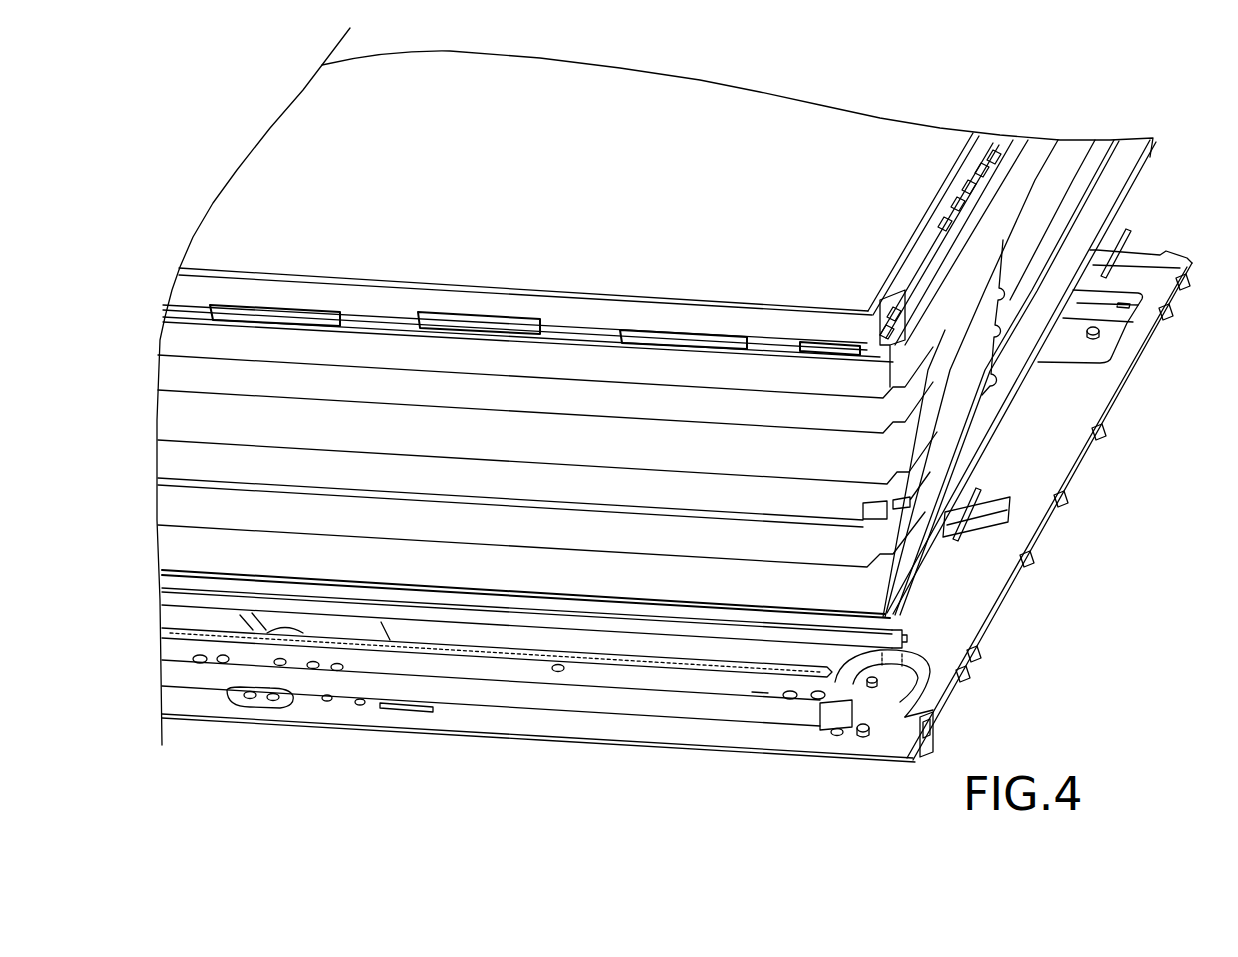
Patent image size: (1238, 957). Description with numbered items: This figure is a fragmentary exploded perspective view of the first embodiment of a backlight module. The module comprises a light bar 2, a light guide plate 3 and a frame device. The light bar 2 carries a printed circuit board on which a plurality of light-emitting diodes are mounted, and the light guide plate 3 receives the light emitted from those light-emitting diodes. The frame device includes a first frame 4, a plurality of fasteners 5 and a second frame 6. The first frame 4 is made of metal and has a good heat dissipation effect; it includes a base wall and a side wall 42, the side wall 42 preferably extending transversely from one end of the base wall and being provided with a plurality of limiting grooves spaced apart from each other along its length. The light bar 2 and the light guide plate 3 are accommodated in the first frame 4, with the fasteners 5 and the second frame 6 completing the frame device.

The light bar 2 is at (908, 636).
The light guide plate 3 is at (897, 578).
The first frame 4 is at (618, 748).
The fasteners 5 is at (320, 670).
The second frame 6 is at (193, 287).
The side wall 42 is at (540, 703).